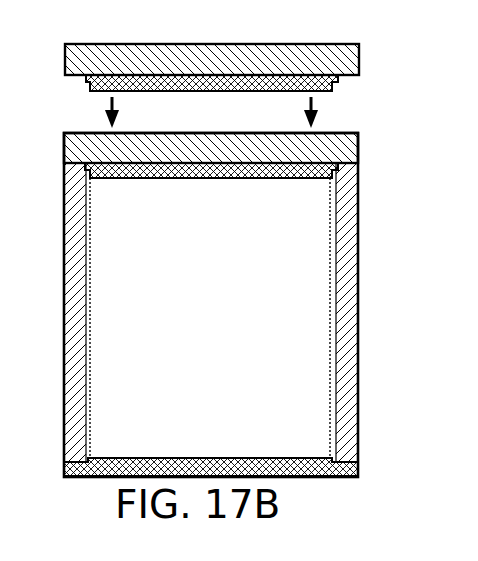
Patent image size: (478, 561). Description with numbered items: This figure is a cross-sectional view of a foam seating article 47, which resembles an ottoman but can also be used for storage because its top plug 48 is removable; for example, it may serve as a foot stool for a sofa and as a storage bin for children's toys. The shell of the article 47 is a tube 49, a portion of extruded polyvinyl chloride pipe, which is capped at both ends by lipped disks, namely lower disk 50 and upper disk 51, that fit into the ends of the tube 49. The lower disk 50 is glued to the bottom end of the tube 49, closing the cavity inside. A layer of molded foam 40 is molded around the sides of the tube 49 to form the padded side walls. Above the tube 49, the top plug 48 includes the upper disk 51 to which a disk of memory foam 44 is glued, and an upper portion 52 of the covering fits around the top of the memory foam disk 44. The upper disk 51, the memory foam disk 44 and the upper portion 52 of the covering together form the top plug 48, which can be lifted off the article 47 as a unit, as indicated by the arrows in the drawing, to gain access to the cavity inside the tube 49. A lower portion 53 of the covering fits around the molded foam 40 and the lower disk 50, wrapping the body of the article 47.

The layer of molded foam 40 is at (350, 186).
The disk of memory foam 44 is at (360, 153).
The foam seating article 47 is at (206, 277).
The top plug 48 is at (249, 78).
The tube 49 is at (330, 248).
The lower disk 50 is at (220, 458).
The upper disk 51 is at (226, 92).
The upper portion of the covering 52 is at (337, 45).
The lower portion of the covering 53 is at (360, 208).